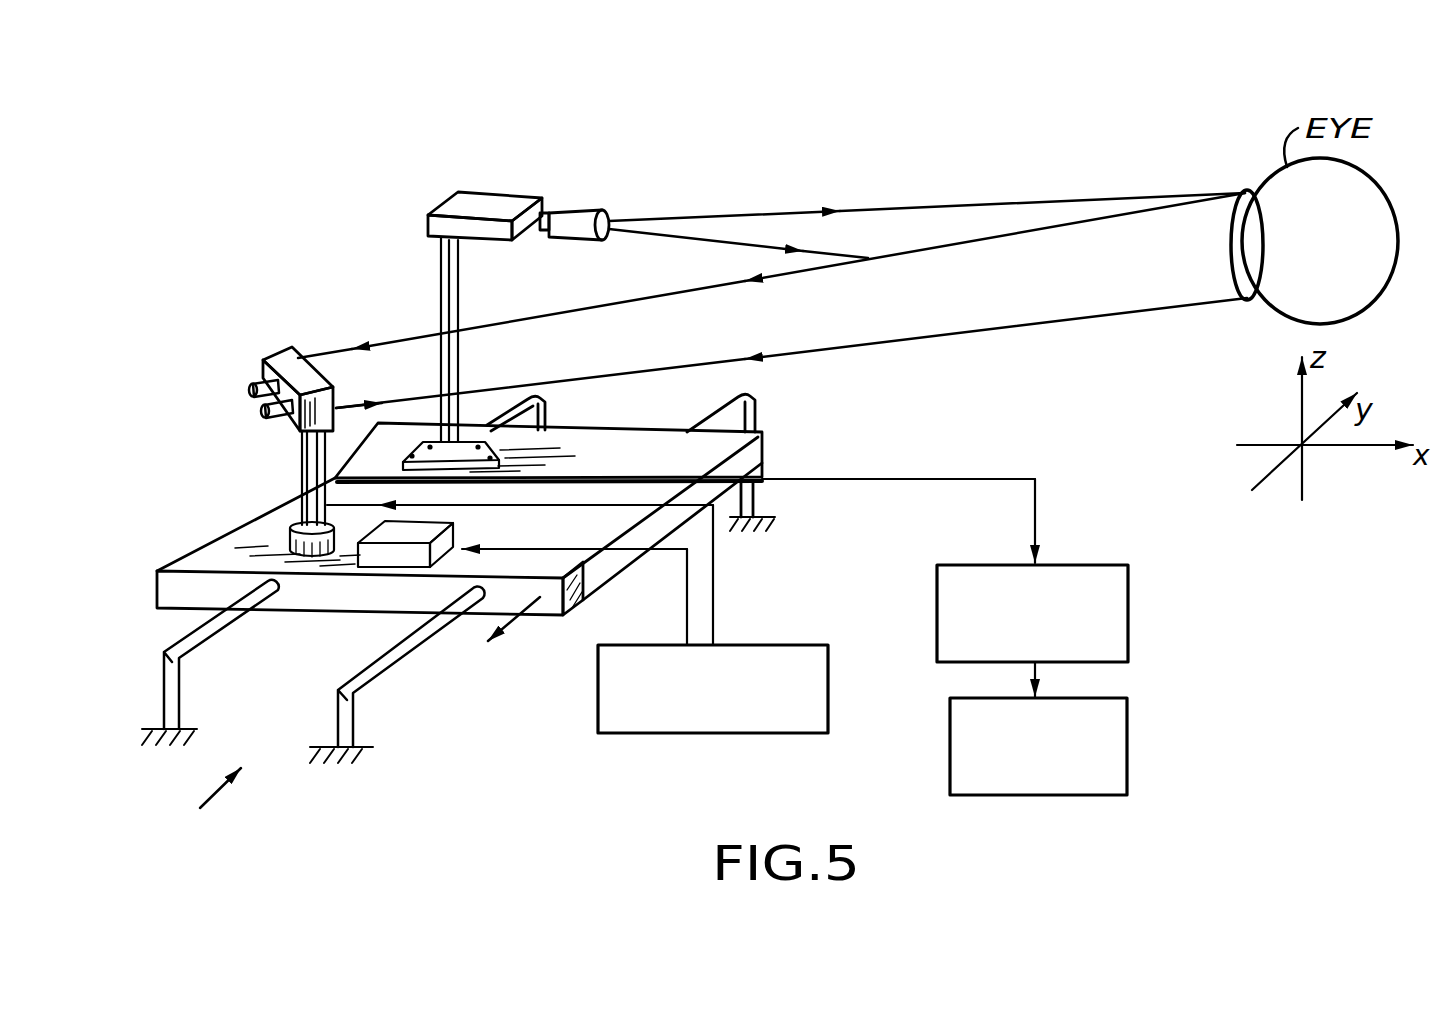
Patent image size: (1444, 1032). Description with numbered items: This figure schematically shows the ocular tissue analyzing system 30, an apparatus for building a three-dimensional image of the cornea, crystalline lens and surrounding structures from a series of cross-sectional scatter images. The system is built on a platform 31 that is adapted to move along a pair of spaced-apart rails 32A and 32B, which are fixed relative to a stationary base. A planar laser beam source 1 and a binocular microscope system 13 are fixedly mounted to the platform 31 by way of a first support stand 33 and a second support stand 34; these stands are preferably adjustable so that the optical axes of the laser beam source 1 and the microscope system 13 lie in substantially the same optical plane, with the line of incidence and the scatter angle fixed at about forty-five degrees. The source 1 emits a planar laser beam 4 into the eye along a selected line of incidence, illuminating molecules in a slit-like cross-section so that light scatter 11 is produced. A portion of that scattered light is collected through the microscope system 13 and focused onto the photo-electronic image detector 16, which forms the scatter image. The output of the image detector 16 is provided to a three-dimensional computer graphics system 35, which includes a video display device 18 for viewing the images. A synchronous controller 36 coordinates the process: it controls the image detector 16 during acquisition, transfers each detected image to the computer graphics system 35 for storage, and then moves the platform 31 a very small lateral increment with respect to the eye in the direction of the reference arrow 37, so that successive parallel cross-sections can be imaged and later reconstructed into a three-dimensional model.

The planar laser beam source 1 is at (496, 184).
The planar laser beam 4 is at (960, 203).
The light scatter 11 is at (1048, 318).
The binocular microscope system 13 is at (290, 348).
The photo-electronic image detector 16 is at (300, 432).
The video display device 18 is at (1128, 742).
The ocular tissue analyzing system 30 is at (205, 810).
The platform 31 is at (208, 537).
The rail 32A is at (205, 642).
The rail 32B is at (387, 673).
The first support stand 33 is at (300, 486).
The second support stand 34 is at (441, 290).
The 3-D computer graphics system 35 is at (1130, 613).
The synchronous controller 36 is at (640, 735).
The reference arrow 37 is at (514, 622).